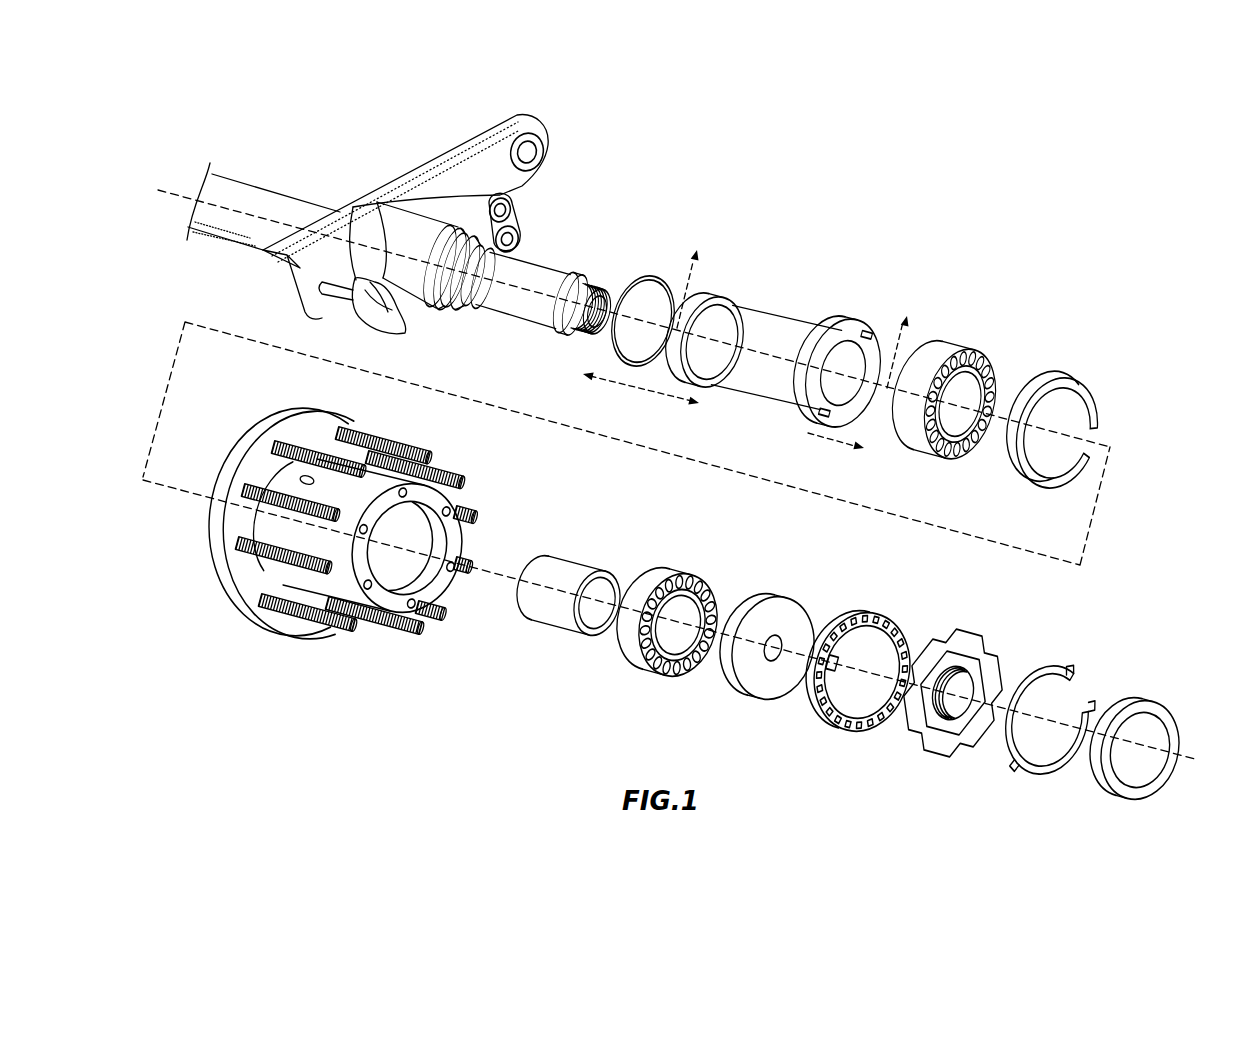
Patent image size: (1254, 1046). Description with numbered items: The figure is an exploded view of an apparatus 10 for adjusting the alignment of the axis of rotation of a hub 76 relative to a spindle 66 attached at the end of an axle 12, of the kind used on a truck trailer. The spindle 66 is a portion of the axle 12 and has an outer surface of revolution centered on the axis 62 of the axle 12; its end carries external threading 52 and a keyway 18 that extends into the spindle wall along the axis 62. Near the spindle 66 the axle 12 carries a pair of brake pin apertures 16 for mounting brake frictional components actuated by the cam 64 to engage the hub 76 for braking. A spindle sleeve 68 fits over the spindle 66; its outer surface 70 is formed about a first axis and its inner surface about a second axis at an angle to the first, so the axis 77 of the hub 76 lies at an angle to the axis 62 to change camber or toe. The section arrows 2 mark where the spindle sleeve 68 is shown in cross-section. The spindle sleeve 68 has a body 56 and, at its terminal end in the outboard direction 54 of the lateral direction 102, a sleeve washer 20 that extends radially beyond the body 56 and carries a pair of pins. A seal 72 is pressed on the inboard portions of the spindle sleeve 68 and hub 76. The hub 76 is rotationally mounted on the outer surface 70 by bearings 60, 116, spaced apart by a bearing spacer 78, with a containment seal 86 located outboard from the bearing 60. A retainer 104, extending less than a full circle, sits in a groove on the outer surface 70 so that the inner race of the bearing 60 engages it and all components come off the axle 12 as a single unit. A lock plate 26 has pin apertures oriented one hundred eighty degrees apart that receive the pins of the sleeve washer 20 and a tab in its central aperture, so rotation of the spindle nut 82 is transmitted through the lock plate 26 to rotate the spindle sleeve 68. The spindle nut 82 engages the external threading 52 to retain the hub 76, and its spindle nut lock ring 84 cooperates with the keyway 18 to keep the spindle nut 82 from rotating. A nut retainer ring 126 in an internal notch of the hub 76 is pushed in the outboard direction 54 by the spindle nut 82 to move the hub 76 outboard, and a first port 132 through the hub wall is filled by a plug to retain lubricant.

The apparatus 10 is at (1030, 162).
The axle 12 is at (248, 240).
The brake pin apertures 16 is at (512, 240).
The keyway 18 is at (587, 286).
The sleeve washer 20 is at (851, 328).
The lock plate 26 is at (875, 610).
The external threading 52 is at (560, 323).
The outboard direction 54 is at (833, 446).
The body 56 is at (752, 316).
The bearing 60 is at (671, 564).
The axis 62 is at (170, 193).
The cam 64 is at (397, 322).
The spindle 66 is at (570, 275).
The spindle sleeve 68 is at (794, 337).
The spindle sleeve outer surface 70 is at (775, 382).
The seal 72 is at (652, 276).
The hub 76 is at (280, 623).
The axis of the hub 77 is at (497, 574).
The bearing spacer 78 is at (567, 568).
The spindle nut 82 is at (975, 630).
The spindle nut lock ring 84 is at (1063, 671).
The containment seal 86 is at (776, 592).
The lateral direction 102 is at (643, 389).
The retainer 104 is at (1068, 378).
The bearing 116 is at (956, 348).
The nut retainer ring 126 is at (1153, 698).
The first port 132 is at (302, 480).
The section line 2 is at (798, 308).